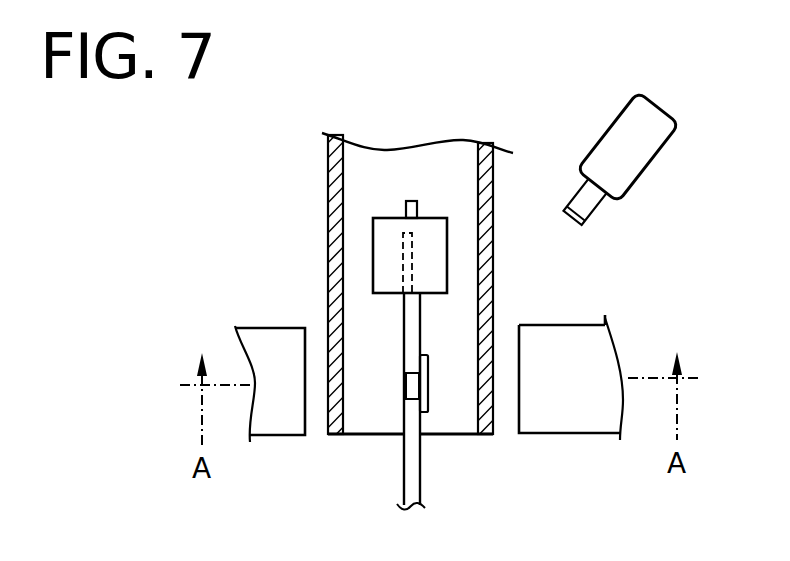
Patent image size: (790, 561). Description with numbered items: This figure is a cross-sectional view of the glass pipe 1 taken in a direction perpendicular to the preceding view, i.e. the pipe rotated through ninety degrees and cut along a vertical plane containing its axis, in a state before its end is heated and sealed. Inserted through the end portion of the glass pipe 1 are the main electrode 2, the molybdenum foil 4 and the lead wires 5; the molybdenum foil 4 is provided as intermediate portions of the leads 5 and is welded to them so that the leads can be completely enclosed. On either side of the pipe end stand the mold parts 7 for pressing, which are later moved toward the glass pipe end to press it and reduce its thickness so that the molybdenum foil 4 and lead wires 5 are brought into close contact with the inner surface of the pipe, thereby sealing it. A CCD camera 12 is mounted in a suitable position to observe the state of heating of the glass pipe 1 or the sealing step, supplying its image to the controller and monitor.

The glass pipe 1 is at (328, 162).
The main electrode 2 is at (373, 243).
The molybdenum foil 4 is at (428, 400).
The lead wires 5 is at (404, 315).
The mold parts 7 is at (258, 340).
The CCD camera 12 is at (640, 160).